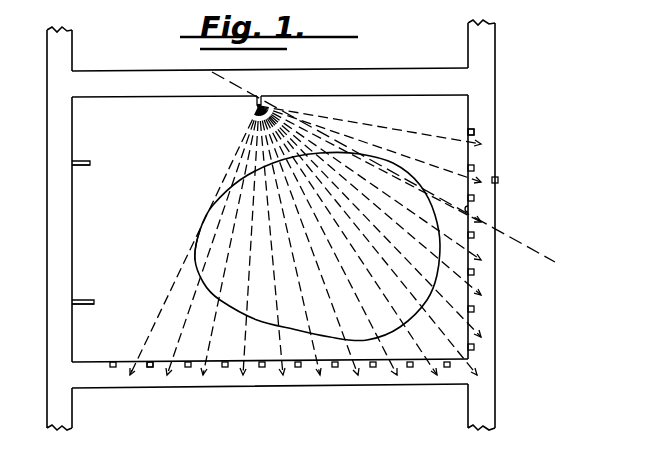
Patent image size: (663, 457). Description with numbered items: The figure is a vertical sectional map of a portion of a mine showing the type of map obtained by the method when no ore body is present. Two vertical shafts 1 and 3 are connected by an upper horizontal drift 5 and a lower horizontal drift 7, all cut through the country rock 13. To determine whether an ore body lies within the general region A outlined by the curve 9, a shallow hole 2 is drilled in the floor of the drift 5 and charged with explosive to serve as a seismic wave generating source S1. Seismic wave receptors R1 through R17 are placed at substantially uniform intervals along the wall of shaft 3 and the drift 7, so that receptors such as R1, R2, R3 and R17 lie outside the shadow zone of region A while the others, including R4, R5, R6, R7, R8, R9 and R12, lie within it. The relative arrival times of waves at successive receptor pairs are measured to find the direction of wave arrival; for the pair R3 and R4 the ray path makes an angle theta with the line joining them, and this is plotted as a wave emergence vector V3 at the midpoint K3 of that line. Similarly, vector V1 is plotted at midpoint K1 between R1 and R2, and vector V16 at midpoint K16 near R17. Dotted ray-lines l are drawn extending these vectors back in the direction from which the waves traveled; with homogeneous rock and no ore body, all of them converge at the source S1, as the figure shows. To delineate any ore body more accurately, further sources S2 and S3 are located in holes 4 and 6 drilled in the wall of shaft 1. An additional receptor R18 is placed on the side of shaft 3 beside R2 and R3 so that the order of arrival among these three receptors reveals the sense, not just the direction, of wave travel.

The vertical shaft 1 is at (57, 51).
The shallow hole 2 is at (262, 98).
The vertical shaft 3 is at (486, 40).
The hole 4 is at (80, 167).
The upper horizontal drift 5 is at (117, 78).
The hole 6 is at (80, 306).
The lower horizontal drift 7 is at (183, 386).
The curve 9 is at (197, 262).
The country rock 13 is at (418, 55).
The region A is at (291, 265).
The seismic wave generating source S1 is at (256, 107).
The source S2 is at (90, 161).
The source S3 is at (93, 300).
The midpoint K1 is at (467, 134).
The midpoint K3 is at (478, 212).
The midpoint K16 is at (133, 360).
The seismic wave receptor R1 is at (475, 131).
The seismic wave receptor R2 is at (475, 168).
The seismic wave receptor R3 is at (475, 198).
The seismic wave receptor R4 is at (474, 238).
The seismic wave receptor R5 is at (474, 273).
The seismic wave receptor R6 is at (474, 310).
The seismic wave receptor R7 is at (474, 348).
The seismic wave receptor R8 is at (447, 368).
The seismic wave receptor R9 is at (410, 368).
The seismic wave receptor R12 is at (298, 368).
The seismic wave receptor R17 is at (113, 368).
The receptor R18 is at (499, 180).
The wave emergence vector V1 is at (484, 145).
The wave emergence vector V3 is at (486, 226).
The wave emergence vector V16 is at (132, 378).
The dotted ray-lines l is at (395, 140).